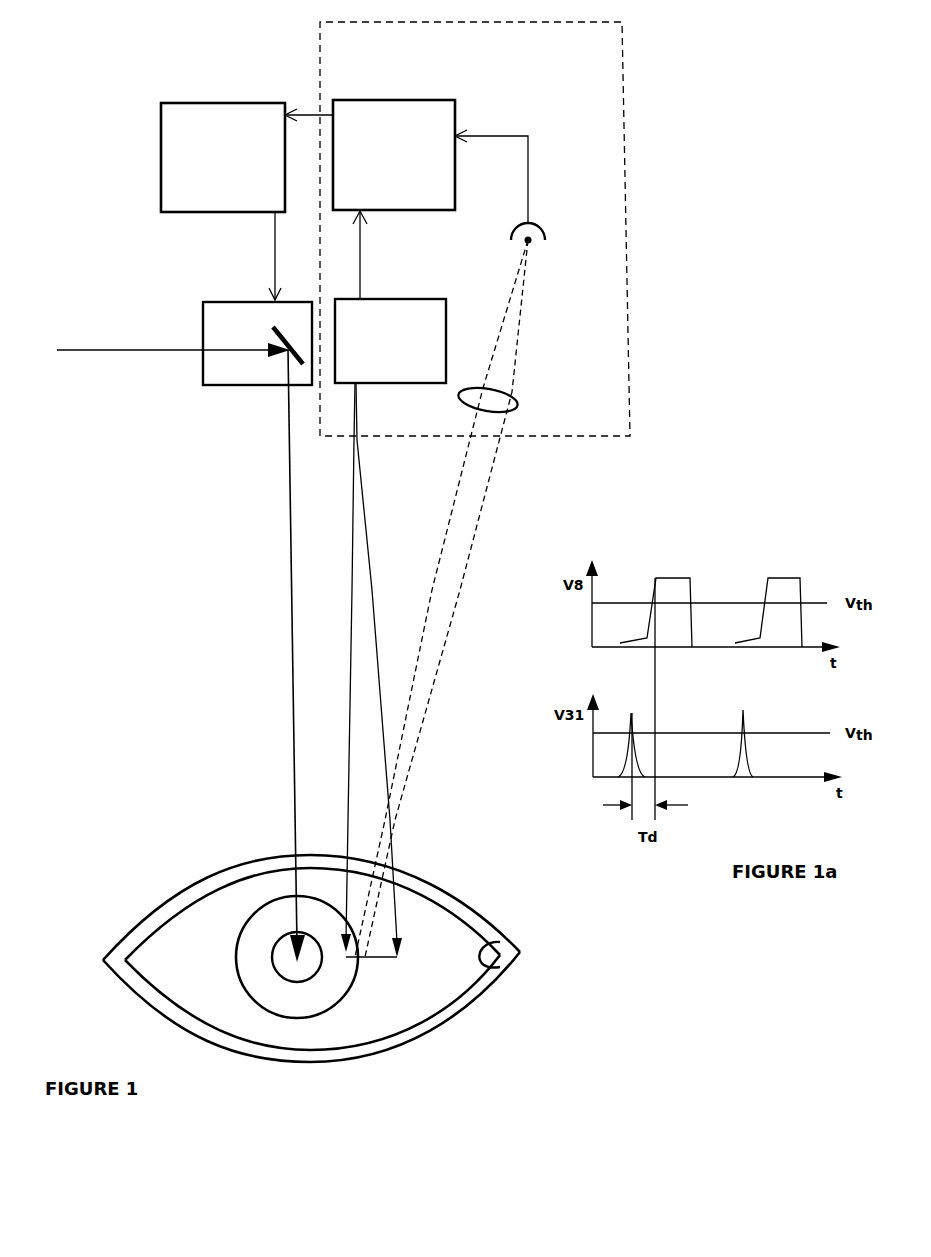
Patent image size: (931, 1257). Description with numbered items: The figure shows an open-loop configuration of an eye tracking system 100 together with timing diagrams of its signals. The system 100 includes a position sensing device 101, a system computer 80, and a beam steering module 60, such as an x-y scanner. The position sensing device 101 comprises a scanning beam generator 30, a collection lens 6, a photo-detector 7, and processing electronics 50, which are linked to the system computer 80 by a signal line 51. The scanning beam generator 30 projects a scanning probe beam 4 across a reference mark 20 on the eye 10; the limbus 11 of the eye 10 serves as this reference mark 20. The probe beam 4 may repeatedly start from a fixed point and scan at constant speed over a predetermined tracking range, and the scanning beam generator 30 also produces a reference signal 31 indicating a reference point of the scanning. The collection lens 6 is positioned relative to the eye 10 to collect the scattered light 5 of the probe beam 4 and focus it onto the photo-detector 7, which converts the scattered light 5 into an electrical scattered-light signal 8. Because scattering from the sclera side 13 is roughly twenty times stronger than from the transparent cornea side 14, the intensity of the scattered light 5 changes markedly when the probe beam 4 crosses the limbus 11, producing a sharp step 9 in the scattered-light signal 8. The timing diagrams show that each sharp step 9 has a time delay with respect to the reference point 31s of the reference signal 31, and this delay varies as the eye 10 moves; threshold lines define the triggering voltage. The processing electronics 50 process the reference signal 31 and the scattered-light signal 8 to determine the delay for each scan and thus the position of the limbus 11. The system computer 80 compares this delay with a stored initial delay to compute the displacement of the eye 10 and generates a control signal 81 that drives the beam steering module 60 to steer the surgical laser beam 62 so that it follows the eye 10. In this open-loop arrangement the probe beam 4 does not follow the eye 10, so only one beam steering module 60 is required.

In FIG. 1, the tracking system 100 is at (92, 78).
In FIG. 1, the position sensing device 101 is at (617, 128).
In FIG. 1, the system computer 80 is at (220, 100).
In FIG. 1, the control signal 81 is at (276, 253).
In FIG. 1, the processing electronics 50 is at (428, 104).
In FIG. 1, the output signal line 51 is at (304, 110).
In FIG. 1, the scattered-light signal 8 is at (500, 135).
In FIG. 1, the photo-detector 7 is at (562, 231).
In FIG. 1, the collection lens 6 is at (518, 408).
In FIG. 1, the beam steering module 60 is at (217, 310).
In FIG. 1, the surgical laser beam 62 is at (289, 553).
In FIG. 1, the scanning beam generator 30 is at (413, 308).
In FIG. 1, the reference signal 31 is at (360, 276).
In FIG. 1, the scanning probe beam 4 is at (357, 548).
In FIG. 1, the scattered light 5 is at (472, 545).
In FIG. 1, the eye 10 is at (500, 860).
In FIG. 1, the reference mark 20 is at (263, 902).
In FIG. 1, the limbus 11 is at (258, 997).
In FIG. 1, the cornea side 14 is at (343, 972).
In FIG. 1, the sclera side 13 is at (372, 978).
In FIG. 1A, the sharp step 9 is at (652, 592).
In FIG. 1A, the reference point 31s is at (630, 726).